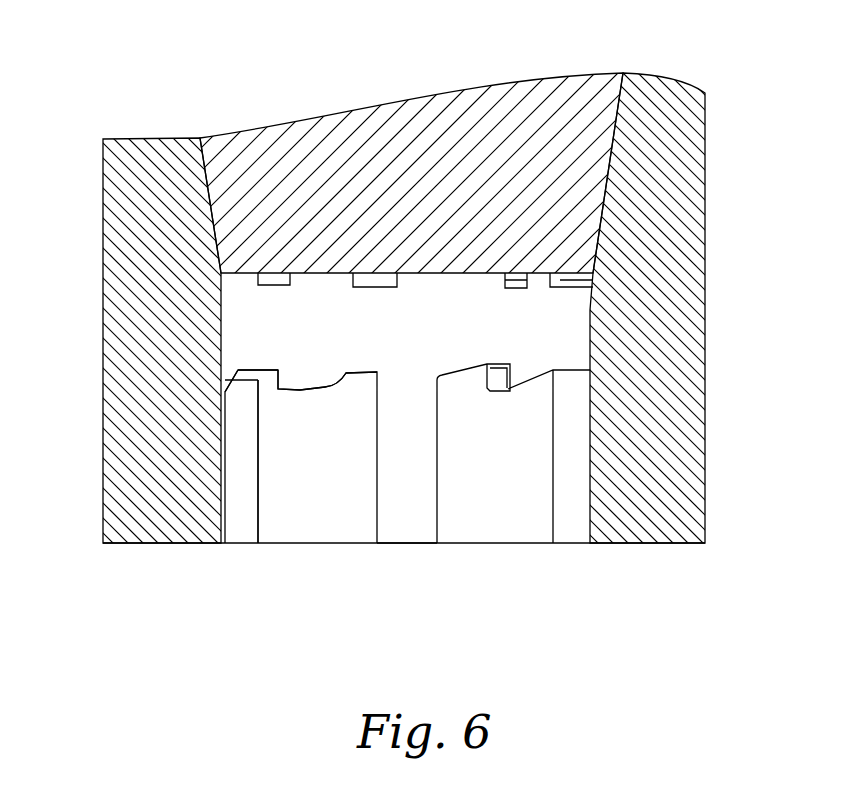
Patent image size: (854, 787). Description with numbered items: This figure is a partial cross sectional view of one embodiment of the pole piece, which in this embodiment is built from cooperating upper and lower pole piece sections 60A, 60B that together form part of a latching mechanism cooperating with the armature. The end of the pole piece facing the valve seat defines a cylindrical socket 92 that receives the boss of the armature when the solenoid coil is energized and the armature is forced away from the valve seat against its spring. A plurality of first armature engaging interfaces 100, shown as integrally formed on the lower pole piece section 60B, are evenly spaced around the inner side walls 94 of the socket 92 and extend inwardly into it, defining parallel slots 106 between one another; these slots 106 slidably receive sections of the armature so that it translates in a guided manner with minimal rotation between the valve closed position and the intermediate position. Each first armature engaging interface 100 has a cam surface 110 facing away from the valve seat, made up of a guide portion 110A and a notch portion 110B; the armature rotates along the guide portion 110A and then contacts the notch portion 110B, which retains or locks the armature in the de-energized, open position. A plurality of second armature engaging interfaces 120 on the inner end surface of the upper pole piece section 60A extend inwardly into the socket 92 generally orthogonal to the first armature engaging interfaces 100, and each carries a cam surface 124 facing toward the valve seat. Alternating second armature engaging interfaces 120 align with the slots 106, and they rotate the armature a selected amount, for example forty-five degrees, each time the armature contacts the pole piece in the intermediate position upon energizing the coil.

The upper pole piece section 60A is at (527, 100).
The lower pole piece section 60B is at (708, 433).
The cylindrical socket 92 is at (533, 548).
The inner side walls 94 is at (250, 377).
The first armature engaging interfaces 100 is at (321, 510).
The slots 106 is at (407, 500).
The cam surface 110 is at (293, 362).
The guide portion 110A is at (362, 380).
The notch portion 110B is at (325, 402).
The second armature engaging interfaces 120 is at (290, 272).
The cam surface 124 is at (257, 284).